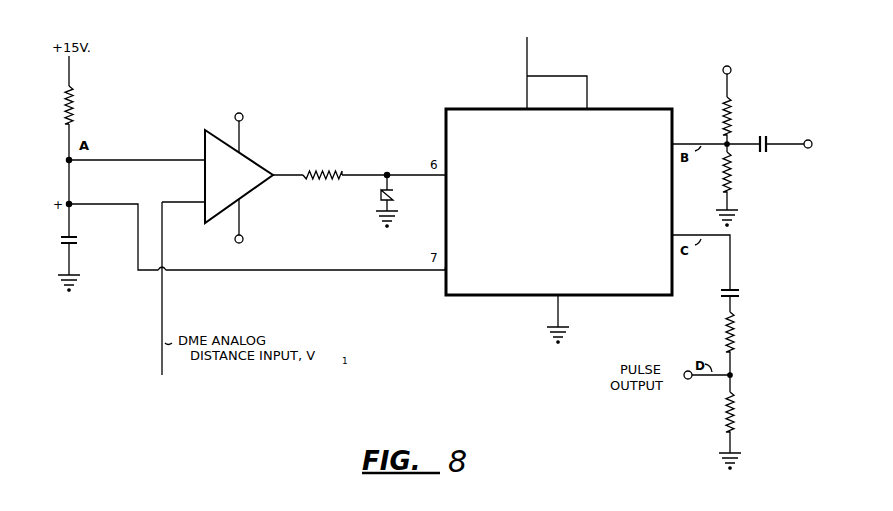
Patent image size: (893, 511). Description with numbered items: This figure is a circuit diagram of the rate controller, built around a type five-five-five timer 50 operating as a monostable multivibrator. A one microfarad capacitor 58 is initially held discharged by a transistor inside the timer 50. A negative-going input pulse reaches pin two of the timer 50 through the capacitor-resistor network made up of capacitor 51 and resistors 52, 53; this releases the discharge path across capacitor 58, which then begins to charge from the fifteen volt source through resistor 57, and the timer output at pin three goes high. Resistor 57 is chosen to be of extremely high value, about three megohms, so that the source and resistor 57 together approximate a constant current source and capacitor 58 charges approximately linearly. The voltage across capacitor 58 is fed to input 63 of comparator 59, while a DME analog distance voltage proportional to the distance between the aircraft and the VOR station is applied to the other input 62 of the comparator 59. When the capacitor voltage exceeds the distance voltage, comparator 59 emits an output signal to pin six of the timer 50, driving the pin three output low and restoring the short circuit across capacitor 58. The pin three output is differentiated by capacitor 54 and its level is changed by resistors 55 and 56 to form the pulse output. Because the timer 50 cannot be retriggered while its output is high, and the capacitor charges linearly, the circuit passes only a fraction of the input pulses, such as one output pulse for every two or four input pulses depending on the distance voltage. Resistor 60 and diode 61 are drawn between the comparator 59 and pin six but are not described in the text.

The timer 50 is at (640, 108).
The capacitor 51 is at (780, 140).
The resistor 52 is at (733, 93).
The resistor 53 is at (733, 182).
The capacitor 54 is at (745, 295).
The resistor 55 is at (738, 345).
The resistor 56 is at (738, 415).
The resistor 57 is at (75, 105).
The capacitor 58 is at (78, 241).
The comparator 59 is at (254, 160).
The resistor 60 is at (330, 170).
The diode 61 is at (378, 199).
The input 62 is at (205, 201).
The input 63 is at (205, 156).